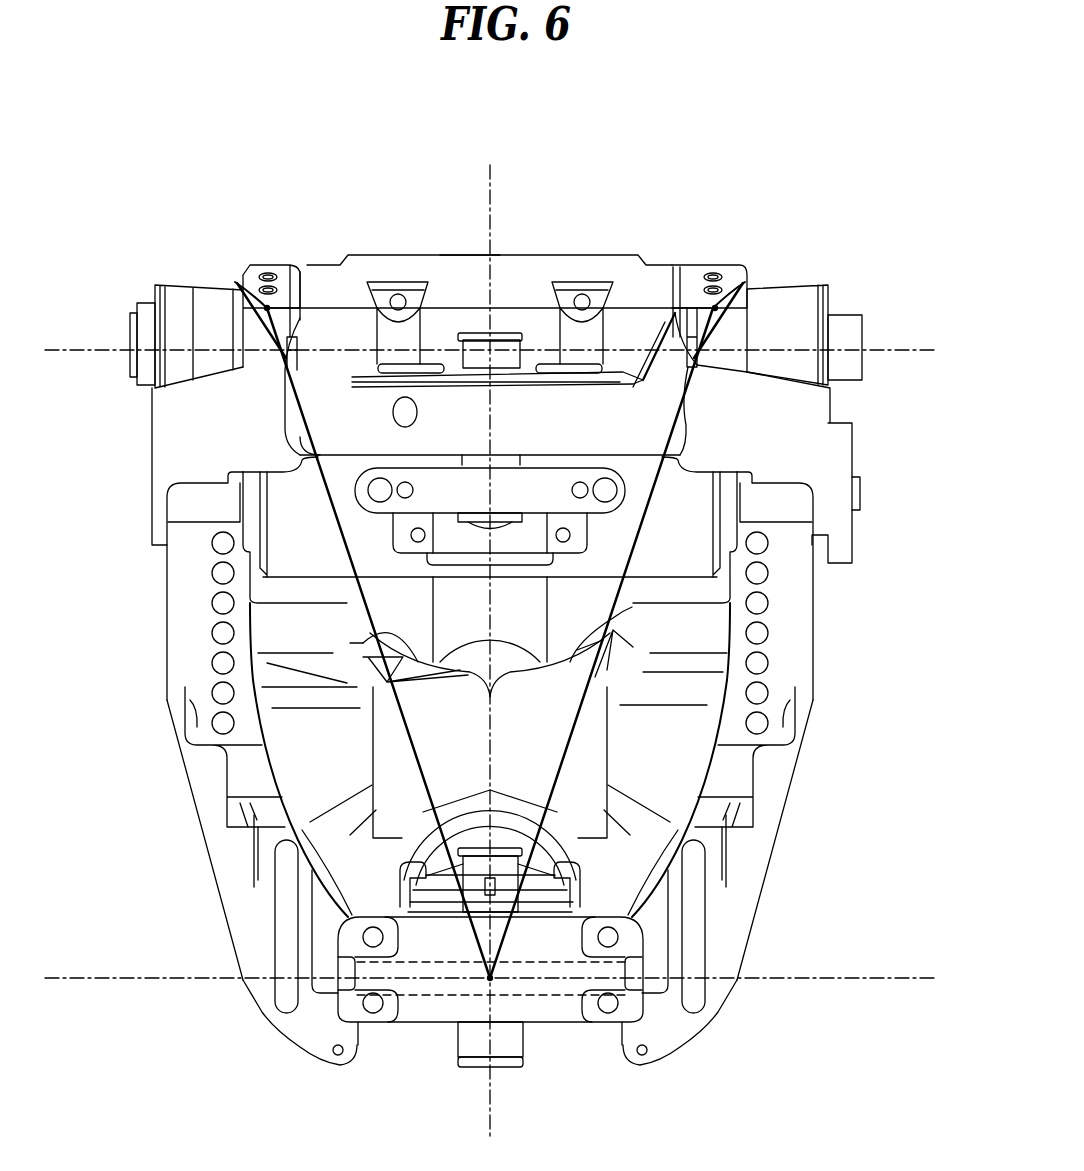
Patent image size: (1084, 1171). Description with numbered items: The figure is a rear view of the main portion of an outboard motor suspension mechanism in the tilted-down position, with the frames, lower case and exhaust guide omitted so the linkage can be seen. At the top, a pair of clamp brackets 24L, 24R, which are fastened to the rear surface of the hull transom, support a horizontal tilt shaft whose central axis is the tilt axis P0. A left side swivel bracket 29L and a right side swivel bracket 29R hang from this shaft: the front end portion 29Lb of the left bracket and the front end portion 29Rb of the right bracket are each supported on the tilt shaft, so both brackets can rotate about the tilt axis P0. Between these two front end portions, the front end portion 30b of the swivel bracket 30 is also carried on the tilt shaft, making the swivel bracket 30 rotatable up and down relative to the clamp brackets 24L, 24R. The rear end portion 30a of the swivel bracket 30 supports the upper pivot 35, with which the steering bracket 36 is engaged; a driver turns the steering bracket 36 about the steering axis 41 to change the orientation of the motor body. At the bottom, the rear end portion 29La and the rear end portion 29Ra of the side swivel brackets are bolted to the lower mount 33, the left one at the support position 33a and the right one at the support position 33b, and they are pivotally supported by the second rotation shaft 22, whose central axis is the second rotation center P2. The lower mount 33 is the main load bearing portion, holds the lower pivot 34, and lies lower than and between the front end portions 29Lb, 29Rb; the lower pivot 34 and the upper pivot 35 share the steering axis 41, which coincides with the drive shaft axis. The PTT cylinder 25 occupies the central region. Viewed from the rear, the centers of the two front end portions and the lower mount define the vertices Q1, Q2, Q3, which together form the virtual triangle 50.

The steering axis 41 is at (491, 220).
The tilt axis P0 is at (904, 349).
The second rotation center P2 is at (904, 977).
The swivel bracket 30 is at (392, 255).
The rear end portion of the swivel bracket 30a is at (460, 432).
The front end portion of the swivel bracket 30b is at (470, 255).
The upper pivot 35 is at (527, 340).
The virtual triangle 50 is at (300, 440).
The steering bracket 36 is at (572, 468).
The front end portion of the left side swivel bracket 29Lb is at (266, 266).
The front end portion of the right side swivel bracket 29Rb is at (716, 266).
The left side swivel bracket 29L is at (363, 643).
The right side swivel bracket 29R is at (617, 643).
The rear end portion of the left side swivel bracket 29La is at (360, 913).
The rear end portion of the right side swivel bracket 29Ra is at (625, 913).
The left clamp bracket 24L is at (168, 640).
The right clamp bracket 24R is at (812, 620).
The PTT cylinder 25 is at (515, 626).
The second rotation shaft 22 is at (440, 1000).
The lower mount 33 is at (545, 1022).
The support position 33a is at (367, 970).
The support position 33b is at (613, 970).
The lower pivot 34 is at (470, 1043).
The vertex Q1 is at (235, 282).
The vertex Q2 is at (717, 307).
The vertex Q3 is at (492, 976).